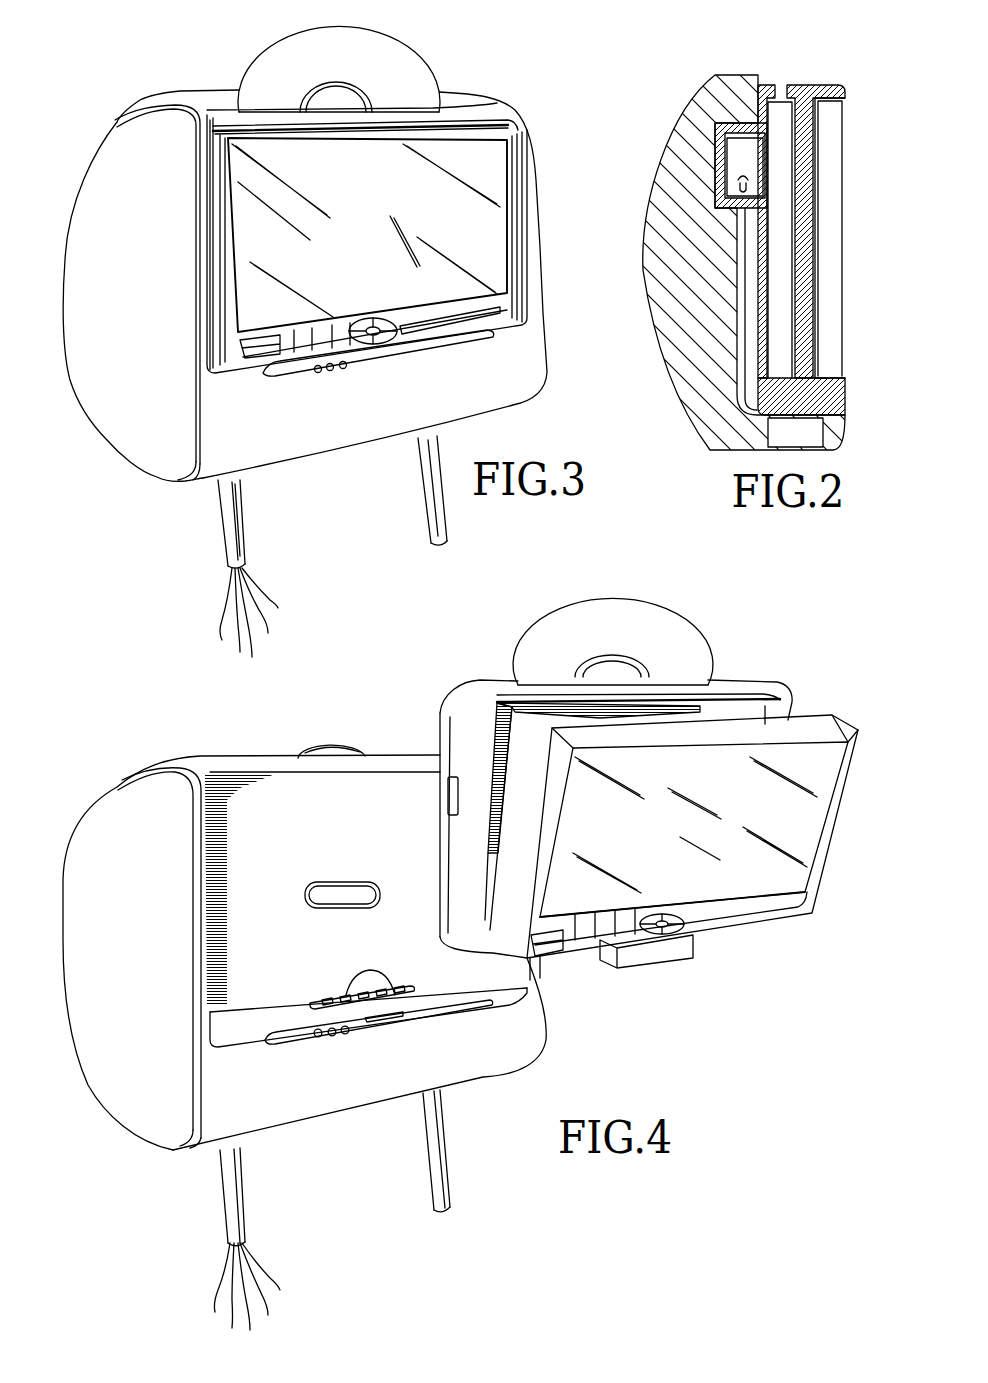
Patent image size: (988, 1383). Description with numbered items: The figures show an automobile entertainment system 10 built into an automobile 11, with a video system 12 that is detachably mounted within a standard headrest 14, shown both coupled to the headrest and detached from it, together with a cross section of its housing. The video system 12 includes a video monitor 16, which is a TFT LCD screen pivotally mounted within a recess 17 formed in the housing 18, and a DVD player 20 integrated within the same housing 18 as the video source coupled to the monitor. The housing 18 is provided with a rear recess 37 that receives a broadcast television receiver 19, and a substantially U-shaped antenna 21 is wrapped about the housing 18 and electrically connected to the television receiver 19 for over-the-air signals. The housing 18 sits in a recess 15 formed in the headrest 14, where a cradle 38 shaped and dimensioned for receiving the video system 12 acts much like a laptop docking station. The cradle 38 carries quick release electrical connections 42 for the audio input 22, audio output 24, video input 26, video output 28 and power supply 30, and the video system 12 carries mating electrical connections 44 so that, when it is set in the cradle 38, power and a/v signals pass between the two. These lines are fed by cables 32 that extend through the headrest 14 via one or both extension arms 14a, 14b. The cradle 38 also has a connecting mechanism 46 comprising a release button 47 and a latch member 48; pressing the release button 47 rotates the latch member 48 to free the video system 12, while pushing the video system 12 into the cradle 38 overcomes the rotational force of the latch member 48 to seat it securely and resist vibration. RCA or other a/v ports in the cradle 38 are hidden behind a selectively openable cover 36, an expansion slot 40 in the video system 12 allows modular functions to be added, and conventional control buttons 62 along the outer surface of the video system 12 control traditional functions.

In FIG. 3, the automobile entertainment system 10 is at (153, 85).
In FIG. 4, the automobile entertainment system 10 is at (167, 723).
In FIG. 3, the automobile 11 is at (460, 63).
In FIG. 4, the automobile 11 is at (80, 738).
In FIG. 3, the video system 12 is at (478, 120).
In FIG. 4, the video system 12 is at (767, 690).
In FIG. 3, the headrest 14 is at (112, 148).
In FIG. 4, the headrest 14 is at (107, 890).
In FIG. 3, the extension arm 14a is at (427, 508).
In FIG. 4, the extension arm 14a is at (447, 1175).
In FIG. 3, the extension arm 14b is at (222, 530).
In FIG. 4, the extension arm 14b is at (237, 1188).
In FIG. 4, the recess 15 is at (387, 787).
In FIG. 3, the video monitor 16 is at (480, 215).
In FIG. 2, the video monitor 16 is at (827, 228).
In FIG. 4, the video monitor 16 is at (798, 824).
In FIG. 3, the recess 17 is at (520, 136).
In FIG. 2, the recess 17 is at (827, 375).
In FIG. 4, the recess 17 is at (495, 720).
In FIG. 3, the housing 18 is at (203, 248).
In FIG. 2, the housing 18 is at (807, 87).
In FIG. 4, the housing 18 is at (735, 680).
In FIG. 2, the television receiver 19 is at (742, 143).
In FIG. 2, the DVD player 20 is at (777, 160).
In FIG. 2, the antenna 21 is at (815, 433).
In FIG. 3, the audio input 22 is at (222, 640).
In FIG. 4, the audio input 22 is at (215, 1290).
In FIG. 3, the audio output 24 is at (240, 652).
In FIG. 4, the audio output 24 is at (232, 1322).
In FIG. 3, the video input 26 is at (252, 657).
In FIG. 4, the video input 26 is at (250, 1325).
In FIG. 3, the video output 28 is at (268, 633).
In FIG. 4, the video output 28 is at (268, 1310).
In FIG. 3, the power supply 30 is at (278, 608).
In FIG. 4, the power supply 30 is at (280, 1290).
In FIG. 4, the cables 32 is at (218, 1262).
In FIG. 3, the cover 36 is at (462, 343).
In FIG. 4, the cover 36 is at (445, 1012).
In FIG. 2, the rear recess 37 is at (718, 155).
In FIG. 4, the cradle 38 is at (237, 1025).
In FIG. 4, the expansion slot 40 is at (452, 770).
In FIG. 4, the electrical connections 42 is at (405, 995).
In FIG. 4, the mating electrical connections 44 is at (650, 950).
In FIG. 4, the connecting mechanism 46 is at (353, 730).
In FIG. 4, the release button 47 is at (317, 753).
In FIG. 4, the latch member 48 is at (330, 890).
In FIG. 3, the control buttons 62 is at (292, 340).
In FIG. 4, the control buttons 62 is at (583, 945).